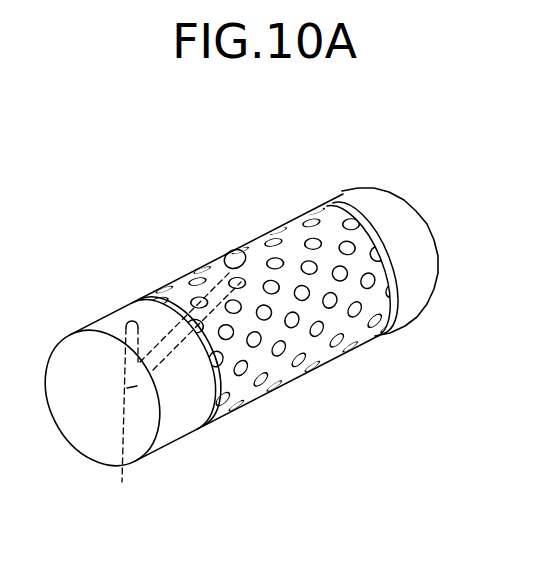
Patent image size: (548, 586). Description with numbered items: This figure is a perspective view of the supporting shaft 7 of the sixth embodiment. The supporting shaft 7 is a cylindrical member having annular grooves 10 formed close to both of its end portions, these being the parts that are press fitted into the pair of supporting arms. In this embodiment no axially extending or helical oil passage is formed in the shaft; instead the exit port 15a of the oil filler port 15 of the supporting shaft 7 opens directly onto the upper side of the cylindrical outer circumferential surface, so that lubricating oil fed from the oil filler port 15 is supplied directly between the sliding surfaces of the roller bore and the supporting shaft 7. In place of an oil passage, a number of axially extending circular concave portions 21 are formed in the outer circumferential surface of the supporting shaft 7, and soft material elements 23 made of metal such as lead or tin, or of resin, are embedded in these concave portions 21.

The supporting shaft 7 is at (296, 247).
The annular groove 10 is at (341, 212).
The oil filler port 15 is at (170, 394).
The exit port 15a is at (233, 251).
The circular concave portion 21 is at (362, 292).
The soft material element 23 is at (378, 338).